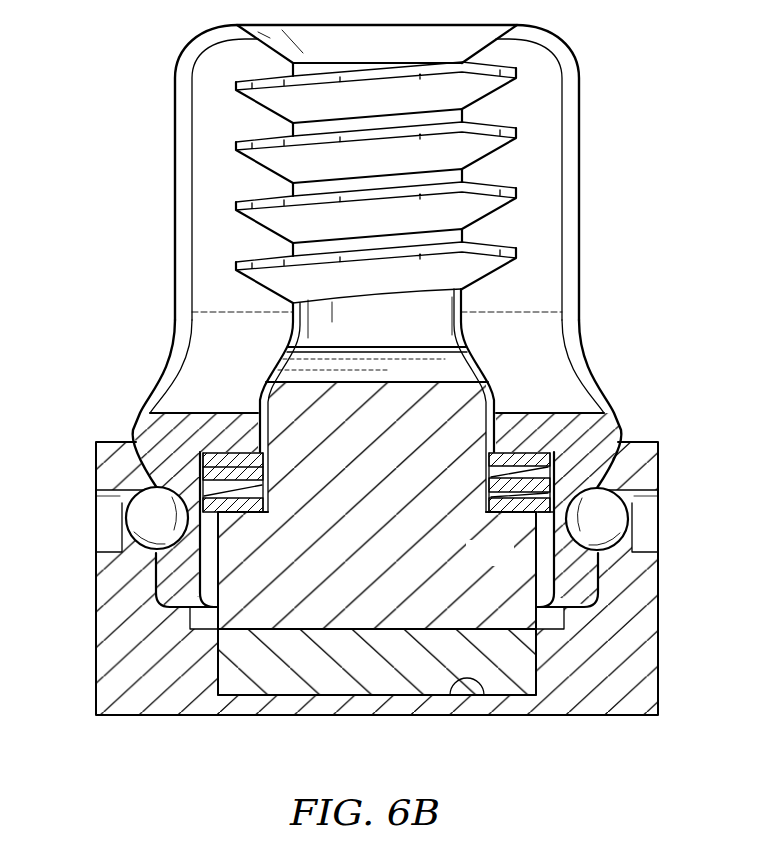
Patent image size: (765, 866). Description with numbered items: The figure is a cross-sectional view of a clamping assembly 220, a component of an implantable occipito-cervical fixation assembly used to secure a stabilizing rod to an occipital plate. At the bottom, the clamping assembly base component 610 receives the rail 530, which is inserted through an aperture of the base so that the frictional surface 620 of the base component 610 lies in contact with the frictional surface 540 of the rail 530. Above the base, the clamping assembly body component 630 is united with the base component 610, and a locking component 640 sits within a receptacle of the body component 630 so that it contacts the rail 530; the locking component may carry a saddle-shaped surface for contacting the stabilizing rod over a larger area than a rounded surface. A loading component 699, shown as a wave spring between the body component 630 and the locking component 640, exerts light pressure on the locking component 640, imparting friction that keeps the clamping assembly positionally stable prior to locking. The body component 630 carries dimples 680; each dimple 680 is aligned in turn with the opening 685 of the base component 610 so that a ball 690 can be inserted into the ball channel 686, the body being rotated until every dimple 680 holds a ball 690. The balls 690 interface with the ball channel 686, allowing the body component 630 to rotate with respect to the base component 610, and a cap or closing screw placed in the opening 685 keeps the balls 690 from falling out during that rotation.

The clamping assembly 220 is at (95, 221).
The clamping assembly body component 630 is at (583, 187).
The locking component 640 is at (402, 395).
The loading component 699 is at (525, 450).
The dimple 680 is at (538, 513).
The opening 685 is at (123, 522).
The ball channel 686 is at (630, 500).
The ball 690 is at (123, 540).
The clamping assembly base component 610 is at (658, 668).
The rail 530 is at (283, 682).
The frictional surface 540 is at (358, 697).
The frictional surface 620 is at (472, 697).